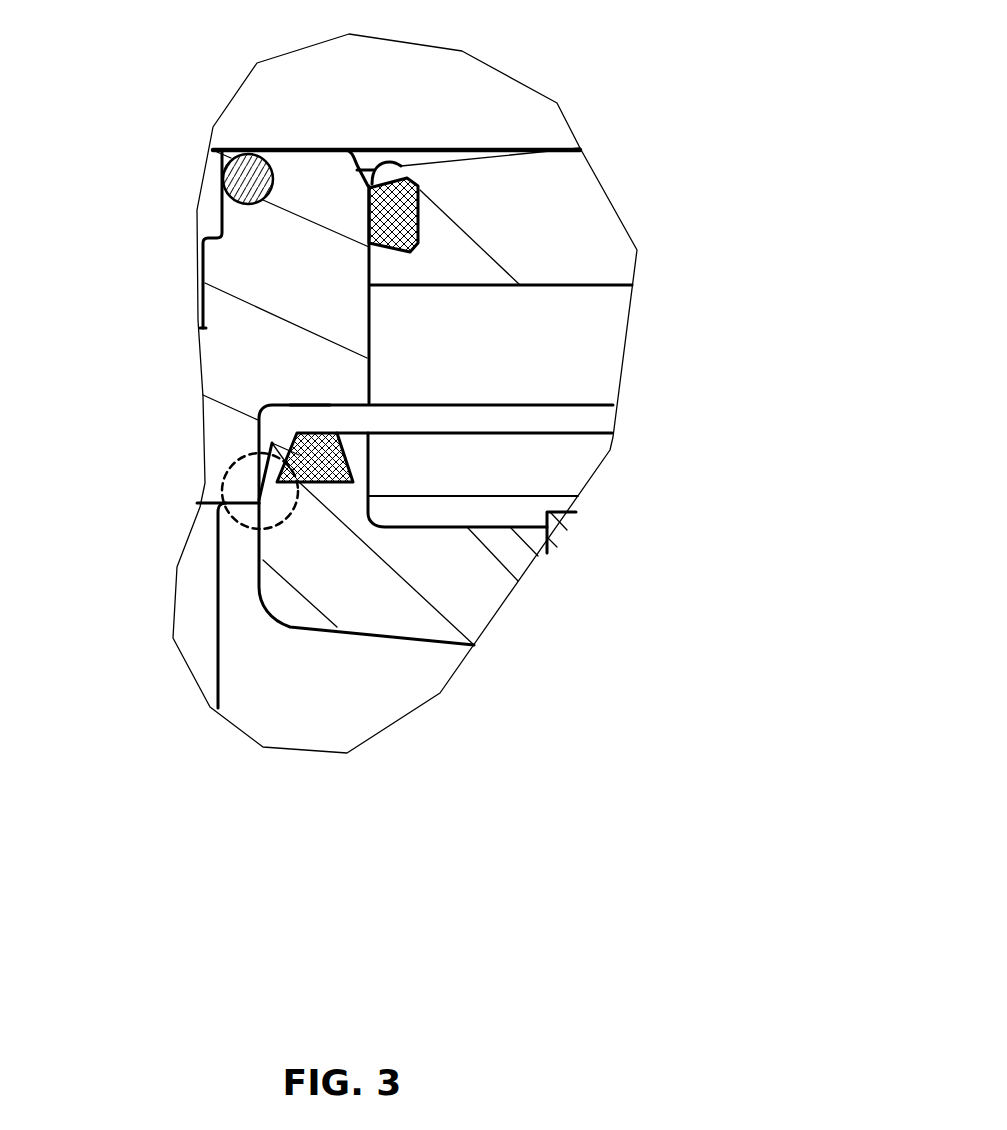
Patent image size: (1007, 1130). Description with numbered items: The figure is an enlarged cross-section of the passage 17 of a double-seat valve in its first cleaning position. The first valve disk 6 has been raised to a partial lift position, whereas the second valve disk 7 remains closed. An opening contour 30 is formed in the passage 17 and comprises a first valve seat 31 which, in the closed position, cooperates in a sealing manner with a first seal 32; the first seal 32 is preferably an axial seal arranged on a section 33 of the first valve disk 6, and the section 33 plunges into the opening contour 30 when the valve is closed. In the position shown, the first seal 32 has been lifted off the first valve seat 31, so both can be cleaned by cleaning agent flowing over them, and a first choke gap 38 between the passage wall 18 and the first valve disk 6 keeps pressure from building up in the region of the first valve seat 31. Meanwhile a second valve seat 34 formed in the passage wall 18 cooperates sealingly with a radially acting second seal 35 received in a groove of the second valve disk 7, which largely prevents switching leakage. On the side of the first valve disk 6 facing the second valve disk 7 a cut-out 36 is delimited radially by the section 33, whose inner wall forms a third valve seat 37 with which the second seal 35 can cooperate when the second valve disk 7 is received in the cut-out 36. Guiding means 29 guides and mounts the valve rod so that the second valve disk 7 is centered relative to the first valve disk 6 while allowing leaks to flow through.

The first valve disk 6 is at (470, 623).
The second valve disk 7 is at (577, 200).
The passage 17 is at (252, 300).
The passage wall 18 is at (368, 353).
The guiding means 29 is at (557, 528).
The opening contour 30 is at (263, 423).
The first valve seat 31 is at (310, 403).
The first seal 32 is at (271, 443).
The section 33 is at (318, 498).
The second valve seat 34 is at (222, 235).
The second seal 35 is at (230, 234).
The cut-out 36 is at (568, 488).
The third valve seat 37 is at (373, 470).
The first choke gap 38 is at (222, 488).